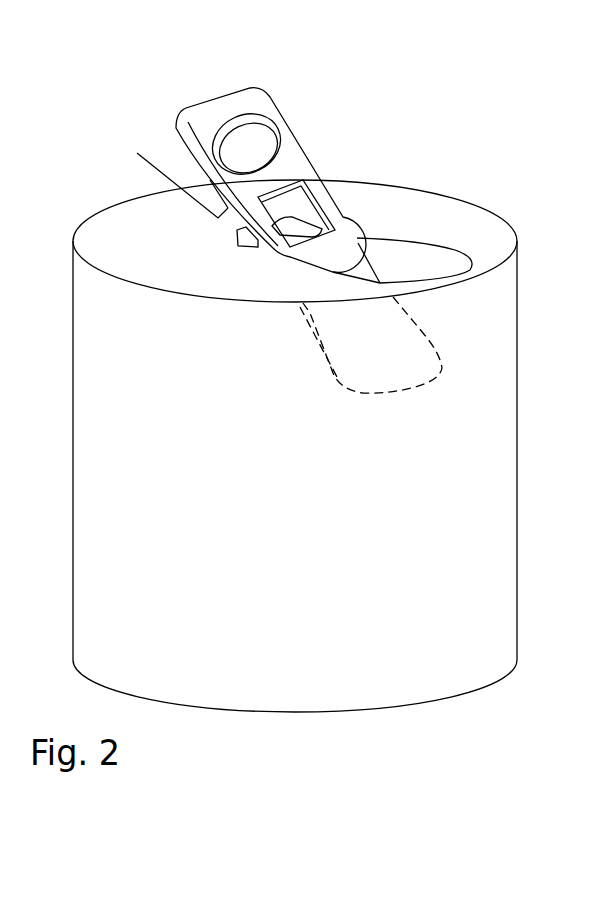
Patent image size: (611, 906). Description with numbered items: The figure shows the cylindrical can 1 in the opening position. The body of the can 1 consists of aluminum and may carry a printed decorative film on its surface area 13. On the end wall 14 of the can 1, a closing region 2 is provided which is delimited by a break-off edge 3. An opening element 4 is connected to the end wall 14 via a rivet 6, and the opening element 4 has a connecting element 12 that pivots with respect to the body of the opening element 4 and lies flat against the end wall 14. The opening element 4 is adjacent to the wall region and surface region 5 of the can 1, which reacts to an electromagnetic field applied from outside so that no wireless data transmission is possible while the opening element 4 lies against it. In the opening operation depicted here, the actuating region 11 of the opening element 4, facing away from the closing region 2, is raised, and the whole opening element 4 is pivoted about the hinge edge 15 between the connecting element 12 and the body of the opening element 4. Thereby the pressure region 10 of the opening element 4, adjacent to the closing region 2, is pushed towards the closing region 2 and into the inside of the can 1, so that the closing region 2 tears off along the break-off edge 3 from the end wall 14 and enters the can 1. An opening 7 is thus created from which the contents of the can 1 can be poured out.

The can 1 is at (519, 101).
The closing region 2 is at (398, 357).
The break-off edge 3 is at (467, 248).
The opening element 4 is at (257, 107).
The wall region and surface region 5 is at (173, 174).
The rivet 6 is at (284, 227).
The opening 7 is at (407, 260).
The pressure region 10 is at (333, 252).
The actuating region 11 is at (200, 125).
The connecting element 12 is at (327, 210).
The surface area 13 is at (265, 450).
The end wall 14 is at (142, 247).
The hinge edge 15 is at (290, 241).